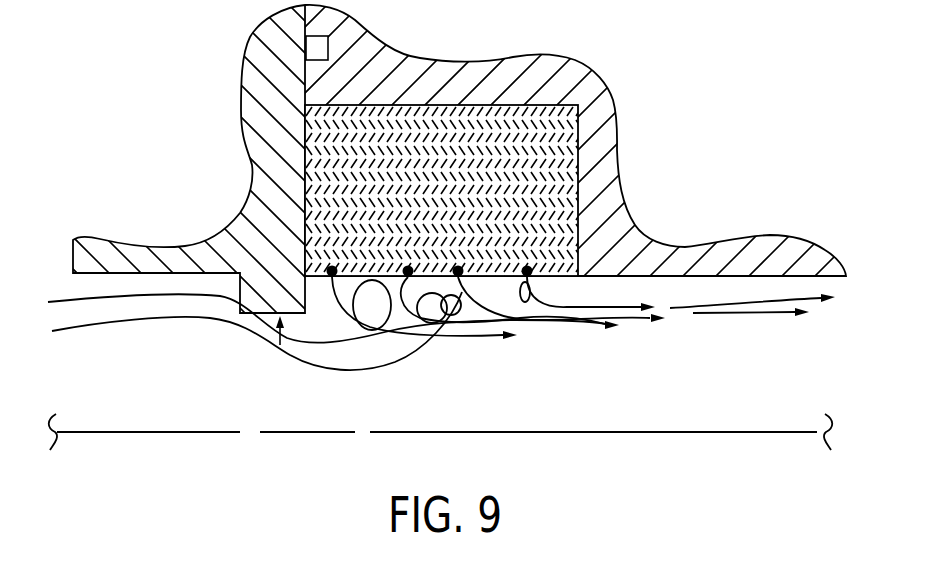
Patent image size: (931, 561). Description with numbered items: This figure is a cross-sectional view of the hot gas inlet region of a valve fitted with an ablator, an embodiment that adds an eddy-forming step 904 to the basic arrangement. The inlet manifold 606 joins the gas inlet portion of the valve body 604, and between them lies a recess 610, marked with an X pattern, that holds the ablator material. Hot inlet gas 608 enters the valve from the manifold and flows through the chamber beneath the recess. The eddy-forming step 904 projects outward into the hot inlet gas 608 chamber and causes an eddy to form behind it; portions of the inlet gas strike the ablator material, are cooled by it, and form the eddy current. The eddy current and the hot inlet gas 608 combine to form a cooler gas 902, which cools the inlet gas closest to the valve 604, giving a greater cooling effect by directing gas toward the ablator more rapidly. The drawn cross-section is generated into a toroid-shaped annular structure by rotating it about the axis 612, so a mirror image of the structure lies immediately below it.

The valve body 604 is at (727, 248).
The inlet manifold 606 is at (170, 253).
The gas inlet 608 is at (100, 327).
The recess for holding ablator material 610 is at (540, 120).
The axis 612 is at (167, 432).
The cooler gas 902 is at (545, 333).
The eddy-forming step 904 is at (284, 348).